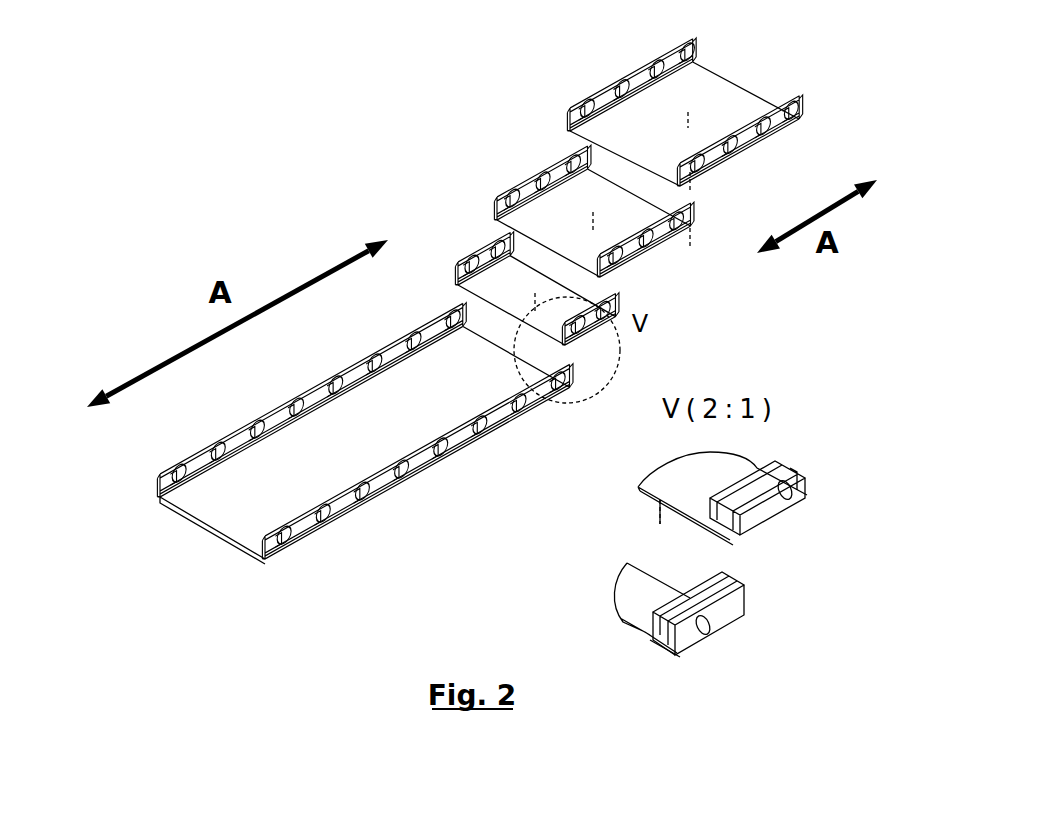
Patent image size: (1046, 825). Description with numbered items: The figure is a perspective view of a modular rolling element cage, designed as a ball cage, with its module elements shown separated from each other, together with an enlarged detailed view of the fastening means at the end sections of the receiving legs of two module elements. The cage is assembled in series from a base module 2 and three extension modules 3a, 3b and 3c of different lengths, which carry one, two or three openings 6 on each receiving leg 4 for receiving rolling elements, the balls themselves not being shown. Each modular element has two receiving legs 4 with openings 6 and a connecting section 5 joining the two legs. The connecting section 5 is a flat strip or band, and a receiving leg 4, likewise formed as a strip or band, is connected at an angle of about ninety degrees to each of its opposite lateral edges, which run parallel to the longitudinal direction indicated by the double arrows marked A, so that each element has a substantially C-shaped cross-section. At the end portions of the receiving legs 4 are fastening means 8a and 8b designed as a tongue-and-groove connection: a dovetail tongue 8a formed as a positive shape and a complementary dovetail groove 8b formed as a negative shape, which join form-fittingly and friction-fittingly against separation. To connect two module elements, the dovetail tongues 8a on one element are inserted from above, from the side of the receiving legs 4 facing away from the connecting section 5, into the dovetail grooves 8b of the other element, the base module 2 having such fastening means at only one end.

The base module 2 is at (443, 382).
The extension module 3a is at (459, 234).
The extension module 3b is at (519, 148).
The extension module 3c is at (608, 54).
The receiving leg 4 is at (397, 355).
The connecting section 5 is at (240, 490).
The opening 6 is at (335, 517).
The dovetail tongue 8a is at (742, 531).
The dovetail groove 8b is at (748, 612).